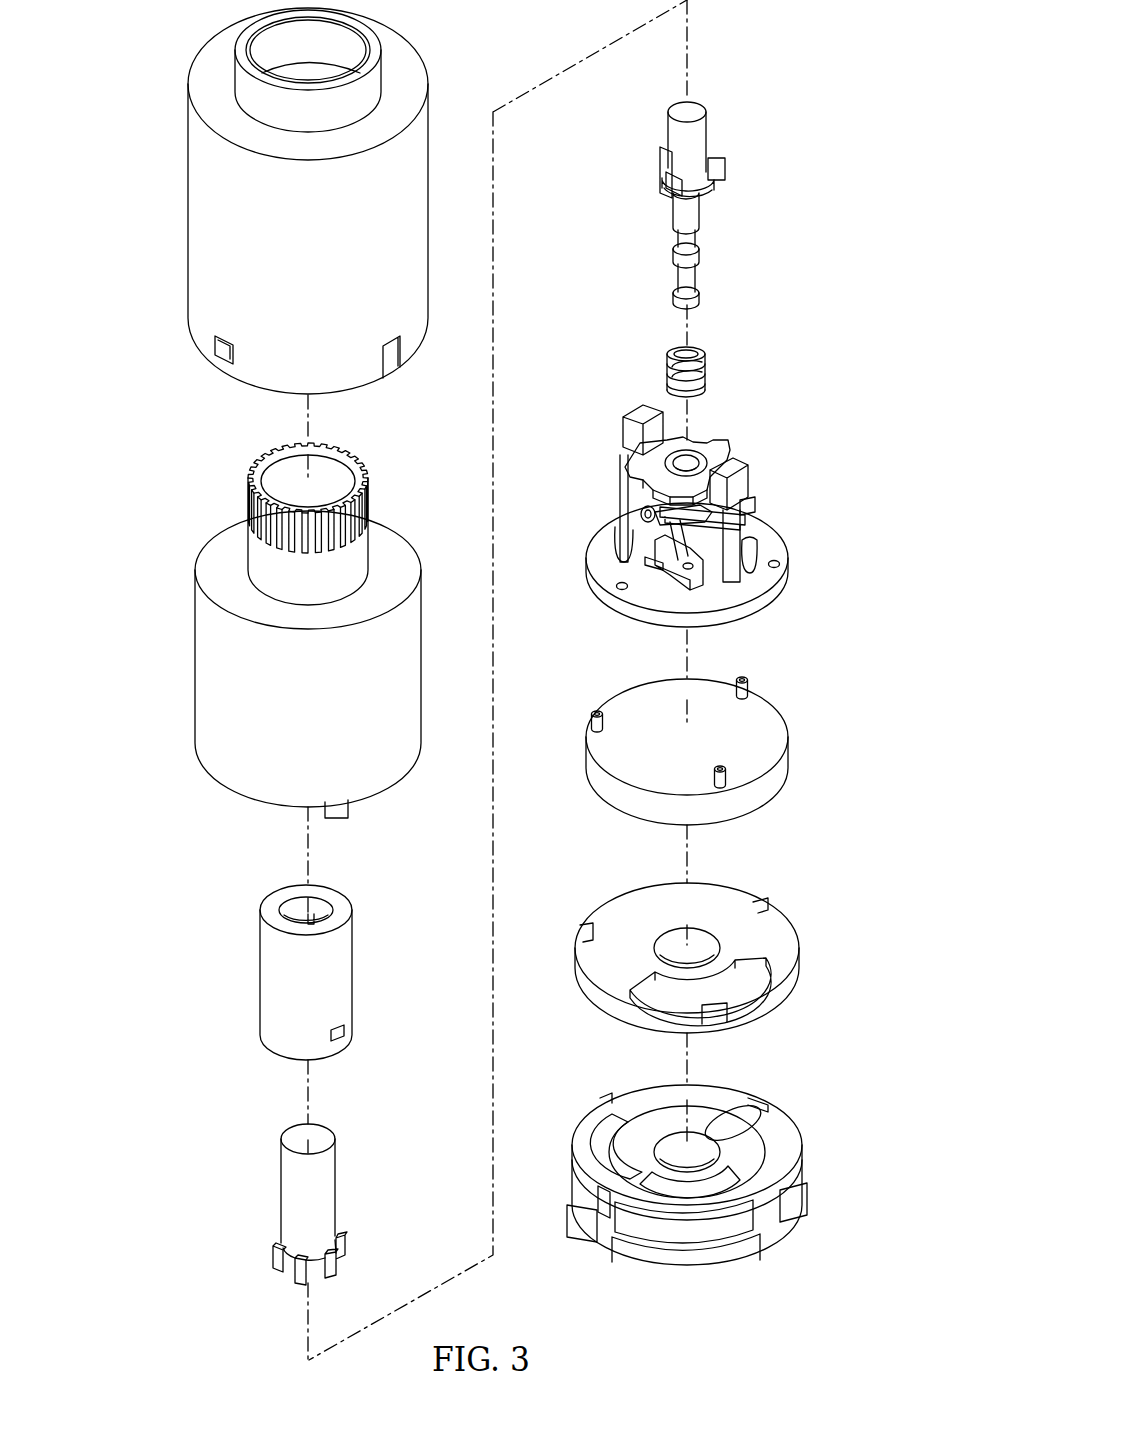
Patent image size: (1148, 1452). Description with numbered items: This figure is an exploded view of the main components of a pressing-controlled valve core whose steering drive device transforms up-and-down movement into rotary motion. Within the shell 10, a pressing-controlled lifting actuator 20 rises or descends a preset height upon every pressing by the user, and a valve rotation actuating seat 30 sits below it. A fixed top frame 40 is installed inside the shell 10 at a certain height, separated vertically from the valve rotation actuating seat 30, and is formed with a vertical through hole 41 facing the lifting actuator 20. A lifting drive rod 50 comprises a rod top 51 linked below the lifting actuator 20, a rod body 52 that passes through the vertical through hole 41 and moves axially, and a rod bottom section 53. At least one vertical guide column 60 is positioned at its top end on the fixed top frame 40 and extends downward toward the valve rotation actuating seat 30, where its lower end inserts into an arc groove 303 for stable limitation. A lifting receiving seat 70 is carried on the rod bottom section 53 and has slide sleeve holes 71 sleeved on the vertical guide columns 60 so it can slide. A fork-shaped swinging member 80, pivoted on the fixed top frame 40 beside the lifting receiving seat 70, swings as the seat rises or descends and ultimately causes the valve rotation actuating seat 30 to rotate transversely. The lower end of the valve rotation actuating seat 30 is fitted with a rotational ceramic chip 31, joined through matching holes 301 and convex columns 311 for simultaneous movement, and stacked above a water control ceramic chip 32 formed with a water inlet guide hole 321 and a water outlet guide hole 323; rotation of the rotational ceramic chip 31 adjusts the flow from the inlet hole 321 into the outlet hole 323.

The shell 10 is at (190, 535).
The pressing-controlled lifting actuator 20 is at (213, 928).
The valve rotation actuating seat 30 is at (770, 603).
The matching holes 301 is at (614, 589).
The arc groove 303 is at (620, 540).
The rotational ceramic chip 31 is at (784, 784).
The convex columns 311 is at (597, 712).
The water control ceramic chip 32 is at (800, 922).
The water inlet guide hole 321 is at (727, 963).
The water outlet guide hole 323 is at (670, 937).
The fixed top frame 40 is at (731, 441).
The vertical through hole 41 is at (694, 456).
The lifting drive rod 50 is at (830, 168).
The rod top 51 is at (708, 134).
The rod body 52 is at (707, 207).
The rod bottom section 53 is at (700, 277).
The vertical guide column 60 is at (635, 503).
The lifting receiving seat 70 is at (748, 520).
The slide sleeve holes 71 is at (750, 510).
The fork-shaped swinging member 80 is at (687, 520).